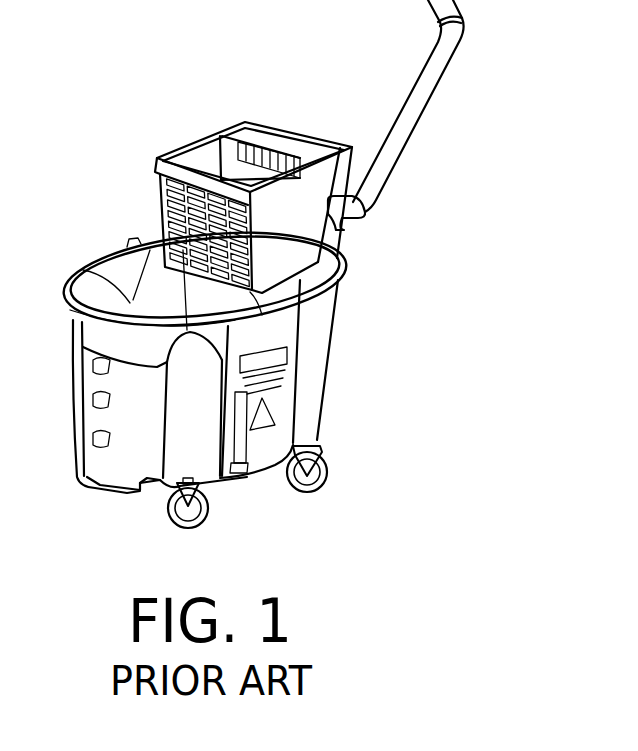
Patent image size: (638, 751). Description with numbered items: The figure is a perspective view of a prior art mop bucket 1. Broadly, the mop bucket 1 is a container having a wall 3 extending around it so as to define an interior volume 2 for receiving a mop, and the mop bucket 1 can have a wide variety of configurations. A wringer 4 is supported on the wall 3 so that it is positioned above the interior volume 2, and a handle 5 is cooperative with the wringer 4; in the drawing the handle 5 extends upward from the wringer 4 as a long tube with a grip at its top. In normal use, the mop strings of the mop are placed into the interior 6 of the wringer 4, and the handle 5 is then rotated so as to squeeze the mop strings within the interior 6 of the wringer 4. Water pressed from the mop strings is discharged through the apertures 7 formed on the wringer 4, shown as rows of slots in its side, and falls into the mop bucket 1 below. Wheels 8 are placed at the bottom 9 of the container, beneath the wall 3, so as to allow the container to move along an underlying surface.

The mop bucket and wringer apparatus 1 is at (389, 326).
The bucket opening 2 is at (107, 283).
The bucket body 3 is at (73, 380).
The wringer basket 4 is at (203, 135).
The wringer handle 5 is at (418, 144).
The press plate 6 is at (273, 147).
The basket drain slots 7 is at (160, 190).
The rear caster wheel 8 is at (328, 477).
The bucket base 9 is at (113, 490).